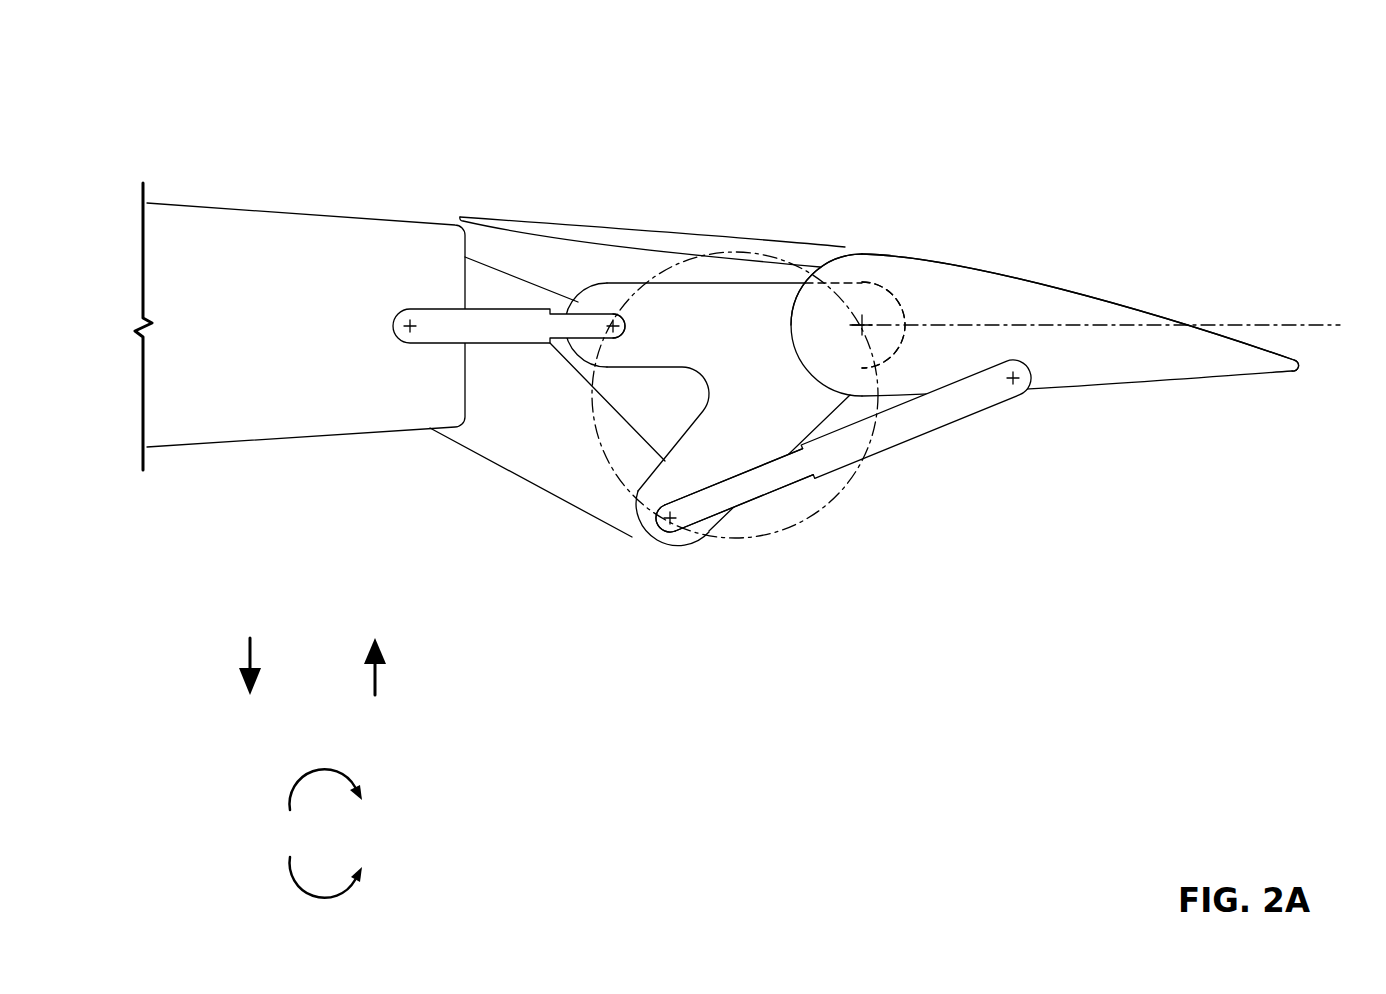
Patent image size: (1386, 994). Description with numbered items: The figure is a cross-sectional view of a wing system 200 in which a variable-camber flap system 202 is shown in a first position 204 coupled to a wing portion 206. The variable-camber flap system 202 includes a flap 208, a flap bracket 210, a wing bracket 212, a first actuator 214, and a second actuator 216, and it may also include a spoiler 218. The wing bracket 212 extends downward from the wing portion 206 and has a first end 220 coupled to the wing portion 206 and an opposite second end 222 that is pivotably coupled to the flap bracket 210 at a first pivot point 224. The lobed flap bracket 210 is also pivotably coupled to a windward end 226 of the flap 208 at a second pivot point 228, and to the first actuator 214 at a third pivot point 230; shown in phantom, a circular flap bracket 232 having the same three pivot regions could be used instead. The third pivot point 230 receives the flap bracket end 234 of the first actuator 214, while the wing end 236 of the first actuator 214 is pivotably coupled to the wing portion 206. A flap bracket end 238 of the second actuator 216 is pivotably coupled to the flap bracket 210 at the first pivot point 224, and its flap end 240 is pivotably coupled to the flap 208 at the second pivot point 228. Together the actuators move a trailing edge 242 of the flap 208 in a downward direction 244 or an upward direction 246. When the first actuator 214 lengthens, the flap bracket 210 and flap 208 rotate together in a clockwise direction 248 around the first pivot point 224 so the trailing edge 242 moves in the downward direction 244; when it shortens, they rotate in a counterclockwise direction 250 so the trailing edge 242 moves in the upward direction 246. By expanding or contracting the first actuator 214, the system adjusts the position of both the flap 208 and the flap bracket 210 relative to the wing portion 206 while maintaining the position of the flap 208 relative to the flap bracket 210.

The wing system 200 is at (304, 70).
The variable-camber flap system 202 is at (990, 554).
The first position 204 is at (1180, 238).
The wing portion 206 is at (234, 412).
The flap 208 is at (1119, 377).
The flap bracket 210 is at (743, 333).
The wing bracket 212 is at (551, 447).
The first actuator 214 is at (433, 310).
The second actuator 216 is at (952, 420).
The spoiler 218 is at (662, 224).
The first end 220 is at (415, 458).
The second end 222 is at (618, 580).
The first pivot point 224 is at (671, 521).
The windward end 226 is at (866, 238).
The second pivot point 228 is at (862, 326).
The third pivot point 230 is at (613, 326).
The circular flap bracket 232 is at (868, 457).
The flap bracket end 234 is at (560, 276).
The wing end 236 is at (376, 298).
The flap bracket end 238 is at (745, 562).
The flap end 240 is at (1026, 418).
The trailing edge 242 is at (1315, 400).
The downward direction 244 is at (252, 648).
The upward direction 246 is at (378, 683).
The clockwise direction 248 is at (320, 771).
The counterclockwise direction 250 is at (322, 897).